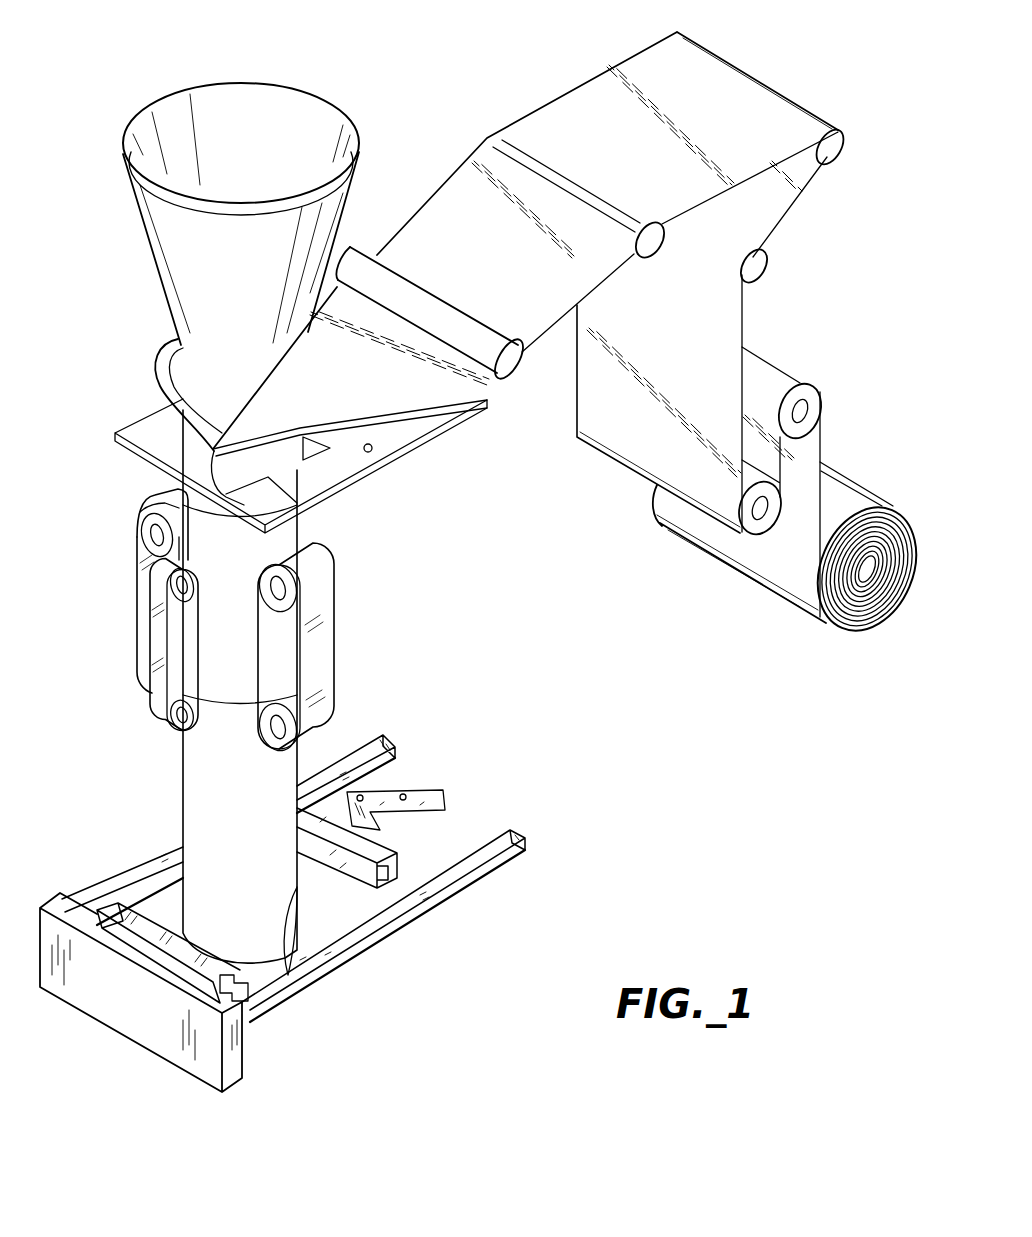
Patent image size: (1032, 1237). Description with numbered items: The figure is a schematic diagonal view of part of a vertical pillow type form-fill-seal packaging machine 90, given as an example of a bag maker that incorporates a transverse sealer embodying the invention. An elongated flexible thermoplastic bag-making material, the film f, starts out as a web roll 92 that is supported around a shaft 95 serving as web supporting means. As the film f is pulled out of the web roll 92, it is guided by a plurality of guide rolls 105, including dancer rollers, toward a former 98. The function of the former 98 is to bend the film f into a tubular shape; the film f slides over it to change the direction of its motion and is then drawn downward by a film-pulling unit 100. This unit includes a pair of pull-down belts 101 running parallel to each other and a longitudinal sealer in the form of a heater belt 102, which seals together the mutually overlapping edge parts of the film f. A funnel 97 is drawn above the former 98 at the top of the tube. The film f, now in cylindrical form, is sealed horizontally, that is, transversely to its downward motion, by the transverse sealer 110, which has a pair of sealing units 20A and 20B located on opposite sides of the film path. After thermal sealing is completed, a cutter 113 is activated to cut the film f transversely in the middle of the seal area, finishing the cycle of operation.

The vertical pillow type form-fill-seal packaging machine 90 is at (437, 72).
The film f is at (647, 56).
The guide rolls 105 is at (842, 140).
The funnel 97 is at (178, 245).
The former 98 is at (133, 336).
The shaft 95 is at (793, 557).
The web roll 92 is at (837, 630).
The film-pulling unit 100 is at (253, 622).
The pull-down belts 101 is at (137, 600).
The heater belt 102 is at (153, 703).
The transverse sealer 110 is at (281, 913).
The sealing unit 20A is at (383, 848).
The sealing unit 20B is at (113, 917).
The cutter 113 is at (253, 987).